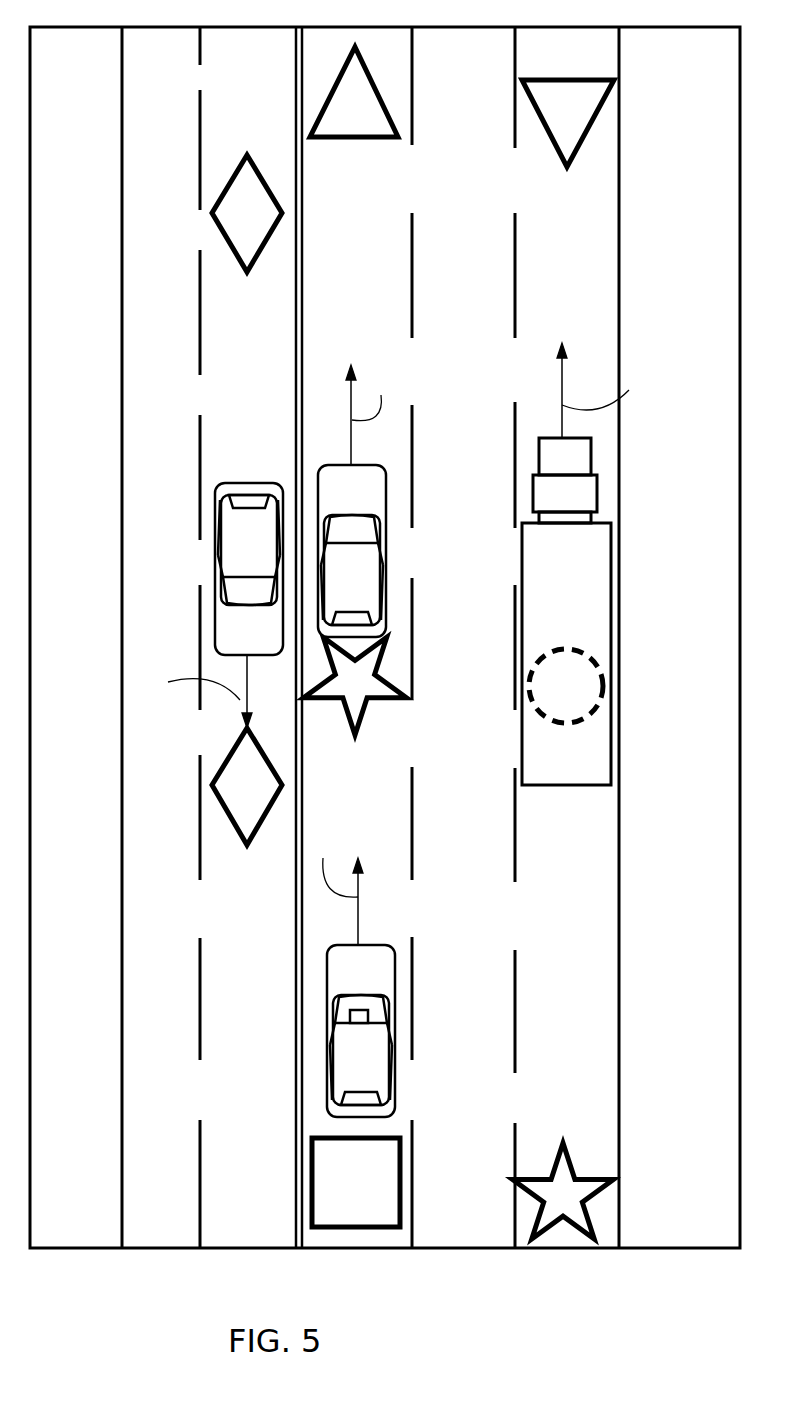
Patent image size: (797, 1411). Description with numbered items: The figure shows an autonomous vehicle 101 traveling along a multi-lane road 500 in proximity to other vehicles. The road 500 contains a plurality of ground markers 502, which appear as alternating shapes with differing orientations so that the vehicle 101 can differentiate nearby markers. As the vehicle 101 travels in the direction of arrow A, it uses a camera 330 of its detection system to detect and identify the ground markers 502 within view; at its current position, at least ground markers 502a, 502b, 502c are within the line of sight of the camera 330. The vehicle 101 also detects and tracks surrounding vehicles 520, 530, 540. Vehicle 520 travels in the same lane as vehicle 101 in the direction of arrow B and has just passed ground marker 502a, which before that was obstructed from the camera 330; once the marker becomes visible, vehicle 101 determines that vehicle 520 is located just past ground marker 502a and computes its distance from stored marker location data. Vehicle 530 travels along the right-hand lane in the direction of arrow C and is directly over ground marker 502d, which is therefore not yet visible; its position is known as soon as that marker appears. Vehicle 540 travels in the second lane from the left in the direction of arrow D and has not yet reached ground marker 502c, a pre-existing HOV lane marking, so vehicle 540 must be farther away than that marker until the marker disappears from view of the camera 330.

The road 500 is at (575, 293).
The ground markers 502 is at (200, 218).
The ground marker 502a is at (375, 703).
The ground marker 502b is at (485, 903).
The ground marker 502c is at (225, 810).
The ground marker 502d is at (522, 707).
The vehicle 520 is at (390, 545).
The vehicle 530 is at (612, 582).
The vehicle 540 is at (215, 585).
The vehicle 101 is at (395, 1090).
The camera 330 is at (350, 1013).